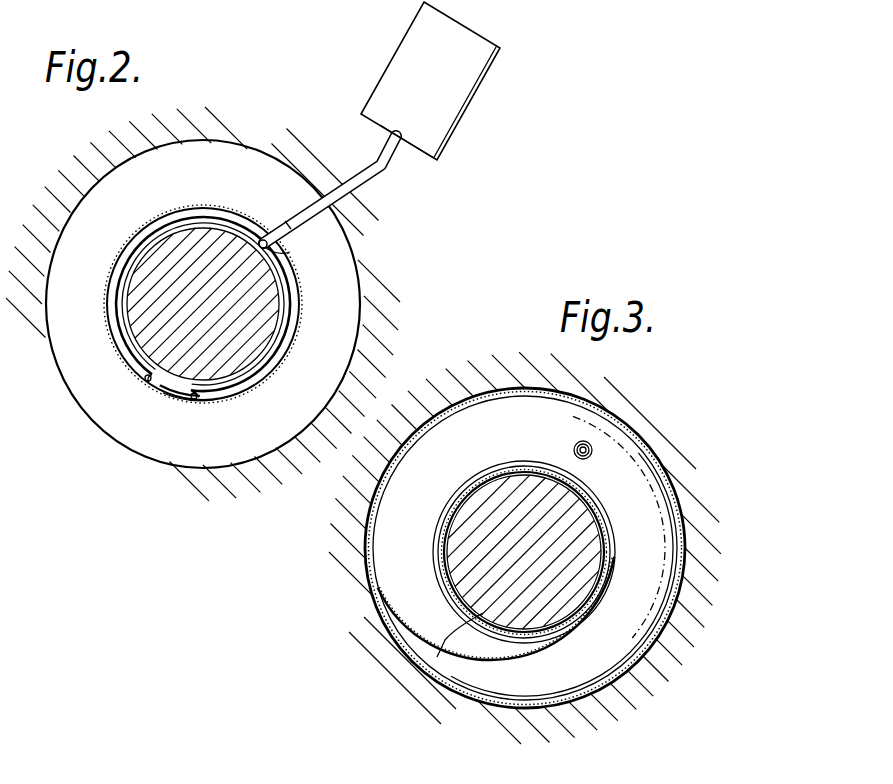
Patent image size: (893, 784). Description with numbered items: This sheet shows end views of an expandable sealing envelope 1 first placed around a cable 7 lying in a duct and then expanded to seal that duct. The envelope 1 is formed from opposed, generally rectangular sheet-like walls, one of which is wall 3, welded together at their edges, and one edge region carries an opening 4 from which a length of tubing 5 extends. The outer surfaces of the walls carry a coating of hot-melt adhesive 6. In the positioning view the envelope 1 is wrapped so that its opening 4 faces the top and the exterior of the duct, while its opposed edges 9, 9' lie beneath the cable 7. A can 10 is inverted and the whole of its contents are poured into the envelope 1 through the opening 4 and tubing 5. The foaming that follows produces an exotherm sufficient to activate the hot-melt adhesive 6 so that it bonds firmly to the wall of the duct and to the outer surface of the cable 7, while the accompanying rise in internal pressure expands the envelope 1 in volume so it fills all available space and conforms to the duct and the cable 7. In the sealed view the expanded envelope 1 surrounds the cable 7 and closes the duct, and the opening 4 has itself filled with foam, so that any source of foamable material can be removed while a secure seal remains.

In FIG. 2, the envelope 1 is at (236, 200).
In FIG. 2, the wall 3 is at (192, 405).
In FIG. 3, the wall 3 is at (447, 563).
In FIG. 2, the opening 4 is at (267, 247).
In FIG. 3, the opening 4 is at (587, 440).
In FIG. 2, the tubing 5 is at (300, 236).
In FIG. 2, the hot-melt adhesive 6 is at (152, 213).
In FIG. 3, the hot-melt adhesive 6 is at (365, 537).
In FIG. 2, the cable 7 is at (165, 355).
In FIG. 3, the cable 7 is at (565, 525).
In FIG. 2, the edge 9 is at (198, 328).
In FIG. 2, the edge 9' is at (217, 418).
In FIG. 2, the can 10 is at (463, 70).